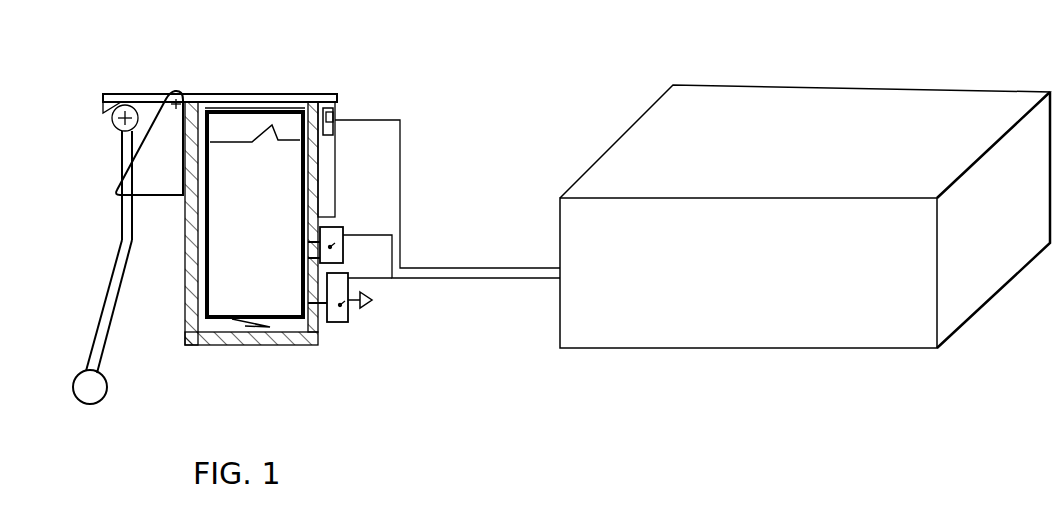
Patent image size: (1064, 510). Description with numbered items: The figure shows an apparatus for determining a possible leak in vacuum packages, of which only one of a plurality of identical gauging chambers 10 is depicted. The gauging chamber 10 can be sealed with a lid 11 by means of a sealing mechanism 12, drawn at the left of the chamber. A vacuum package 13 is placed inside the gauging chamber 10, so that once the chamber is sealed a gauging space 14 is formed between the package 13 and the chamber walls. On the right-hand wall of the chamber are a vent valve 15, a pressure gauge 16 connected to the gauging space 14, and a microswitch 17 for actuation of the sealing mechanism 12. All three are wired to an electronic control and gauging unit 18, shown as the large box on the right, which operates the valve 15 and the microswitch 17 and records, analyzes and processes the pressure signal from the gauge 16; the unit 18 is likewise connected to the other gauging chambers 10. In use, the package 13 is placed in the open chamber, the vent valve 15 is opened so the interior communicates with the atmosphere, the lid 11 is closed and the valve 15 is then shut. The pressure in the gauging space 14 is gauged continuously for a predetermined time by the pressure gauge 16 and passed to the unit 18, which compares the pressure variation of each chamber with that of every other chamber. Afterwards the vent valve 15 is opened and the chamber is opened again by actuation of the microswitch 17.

The gauging chamber 10 is at (293, 338).
The lid 11 is at (296, 100).
The sealing mechanism 12 is at (122, 147).
The vacuum package 13 is at (222, 270).
The gauging space 14 is at (235, 107).
The vent valve 15 is at (350, 323).
The pressure gauge 16 is at (340, 227).
The microswitch 17 is at (337, 117).
The electronic control and gauging unit 18 is at (870, 107).